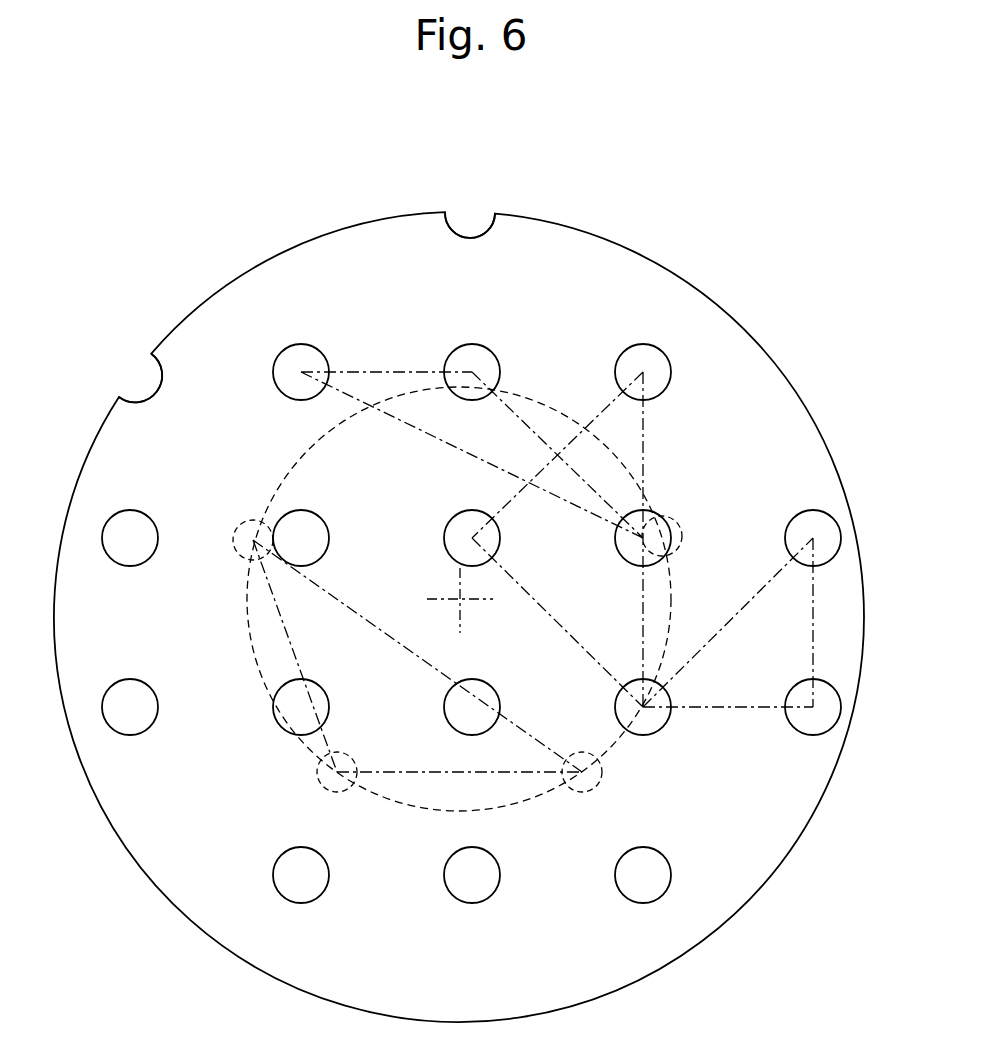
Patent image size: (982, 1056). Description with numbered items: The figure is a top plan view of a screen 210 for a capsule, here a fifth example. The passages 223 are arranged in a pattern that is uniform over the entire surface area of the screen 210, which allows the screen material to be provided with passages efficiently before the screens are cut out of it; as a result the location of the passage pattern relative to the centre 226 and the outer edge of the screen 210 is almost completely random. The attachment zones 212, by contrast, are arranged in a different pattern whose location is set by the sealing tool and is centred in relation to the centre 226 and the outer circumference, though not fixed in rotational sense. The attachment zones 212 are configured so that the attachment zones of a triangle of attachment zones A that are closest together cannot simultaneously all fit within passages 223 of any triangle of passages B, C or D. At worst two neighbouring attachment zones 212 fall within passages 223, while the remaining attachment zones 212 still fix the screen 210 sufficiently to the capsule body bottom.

The screen 210 is at (778, 256).
The attachment zones 212 is at (492, 352).
The passages 223 is at (466, 225).
The centre 226 is at (456, 597).
The triangle of attachment zones A is at (404, 650).
The triangle of passages B is at (371, 370).
The triangle of passages C is at (647, 466).
The triangle of passages D is at (754, 712).